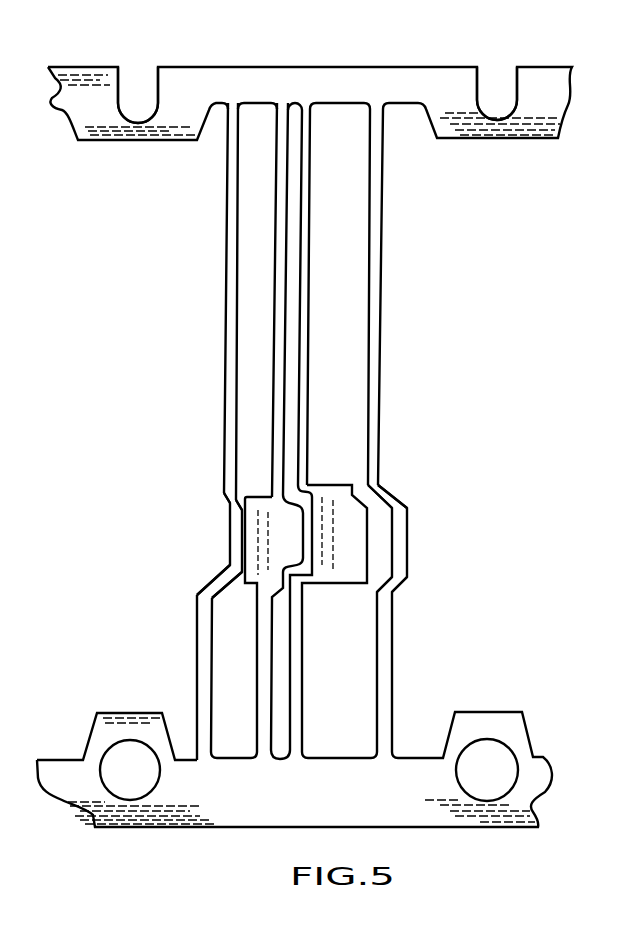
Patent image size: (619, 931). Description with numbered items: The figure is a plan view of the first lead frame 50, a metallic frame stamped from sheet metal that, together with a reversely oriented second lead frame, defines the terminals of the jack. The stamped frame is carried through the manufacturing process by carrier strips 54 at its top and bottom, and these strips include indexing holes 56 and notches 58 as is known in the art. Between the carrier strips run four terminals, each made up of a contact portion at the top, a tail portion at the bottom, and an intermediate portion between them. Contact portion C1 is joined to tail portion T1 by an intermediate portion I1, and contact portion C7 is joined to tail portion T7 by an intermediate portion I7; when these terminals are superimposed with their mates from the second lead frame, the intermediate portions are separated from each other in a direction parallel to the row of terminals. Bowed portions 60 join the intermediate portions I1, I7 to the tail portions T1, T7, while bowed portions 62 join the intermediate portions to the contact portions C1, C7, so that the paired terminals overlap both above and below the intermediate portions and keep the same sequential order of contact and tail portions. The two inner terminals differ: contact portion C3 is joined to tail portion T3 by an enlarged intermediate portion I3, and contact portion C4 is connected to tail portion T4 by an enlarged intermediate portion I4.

The first lead frame 50 is at (418, 393).
The carrier strips 54 is at (108, 127).
The indexing holes 56 is at (118, 760).
The notches 58 is at (118, 87).
The bowed portions 60 is at (220, 573).
The bowed portions 62 is at (228, 497).
The contact portion C1 is at (229, 327).
The contact portion C3 is at (280, 370).
The contact portion C4 is at (303, 350).
The contact portion C7 is at (375, 300).
The intermediate portion I1 is at (232, 517).
The enlarged intermediate portion I3 is at (273, 542).
The enlarged intermediate portion I4 is at (352, 533).
The intermediate portion I7 is at (403, 558).
The tail portion T1 is at (202, 627).
The tail portion T3 is at (268, 677).
The tail portion T4 is at (298, 655).
The tail portion T7 is at (385, 683).